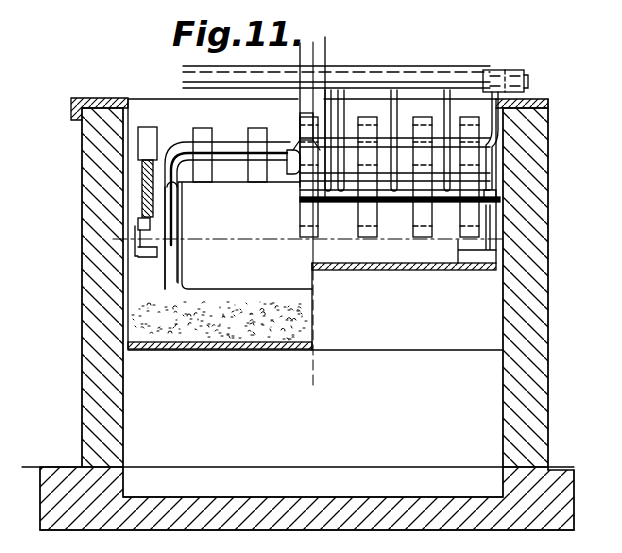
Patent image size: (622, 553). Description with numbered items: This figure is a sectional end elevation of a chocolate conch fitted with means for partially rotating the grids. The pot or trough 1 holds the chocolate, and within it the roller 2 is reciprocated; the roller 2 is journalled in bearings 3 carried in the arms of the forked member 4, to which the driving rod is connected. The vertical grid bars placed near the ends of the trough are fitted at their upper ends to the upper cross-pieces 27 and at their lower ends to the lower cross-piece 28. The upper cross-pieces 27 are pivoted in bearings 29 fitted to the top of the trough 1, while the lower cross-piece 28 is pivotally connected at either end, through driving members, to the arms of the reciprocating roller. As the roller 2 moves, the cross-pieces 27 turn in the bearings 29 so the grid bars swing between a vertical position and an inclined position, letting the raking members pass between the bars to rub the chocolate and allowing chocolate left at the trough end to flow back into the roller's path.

The pot or trough 1 is at (159, 235).
The roller 2 is at (245, 235).
The bearings 3 is at (140, 235).
The forked member 4 is at (243, 126).
The upper cross-pieces 27 is at (398, 75).
The lower cross-piece 28 is at (357, 196).
The bearings 29 is at (511, 78).